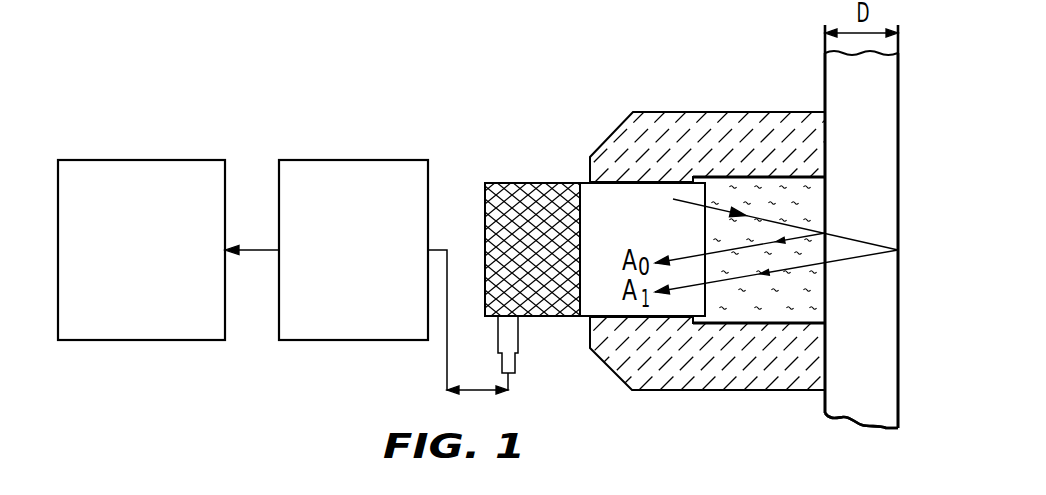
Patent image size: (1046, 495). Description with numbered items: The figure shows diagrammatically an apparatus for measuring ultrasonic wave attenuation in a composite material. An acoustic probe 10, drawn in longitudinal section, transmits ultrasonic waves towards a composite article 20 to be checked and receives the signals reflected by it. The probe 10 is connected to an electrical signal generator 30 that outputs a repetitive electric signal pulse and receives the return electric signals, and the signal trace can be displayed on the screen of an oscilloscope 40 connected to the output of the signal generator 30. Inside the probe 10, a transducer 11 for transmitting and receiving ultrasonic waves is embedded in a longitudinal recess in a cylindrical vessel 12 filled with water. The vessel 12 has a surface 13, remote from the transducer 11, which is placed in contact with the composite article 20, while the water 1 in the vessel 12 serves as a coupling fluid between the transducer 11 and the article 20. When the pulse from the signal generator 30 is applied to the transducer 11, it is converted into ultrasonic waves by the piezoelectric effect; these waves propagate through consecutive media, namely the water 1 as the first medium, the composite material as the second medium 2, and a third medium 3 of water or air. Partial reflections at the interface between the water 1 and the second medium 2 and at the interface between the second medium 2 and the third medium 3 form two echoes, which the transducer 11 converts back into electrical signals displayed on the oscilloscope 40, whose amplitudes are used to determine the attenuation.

The water 1 is at (737, 312).
The second medium 2 is at (861, 240).
The third medium 3 is at (899, 430).
The acoustic probe 10 is at (695, 92).
The transducer 11 is at (605, 195).
The cylindrical vessel 12 is at (668, 137).
The surface 13 is at (823, 138).
The composite article 20 is at (823, 78).
The electrical signal generator 30 is at (335, 323).
The oscilloscope 40 is at (118, 323).